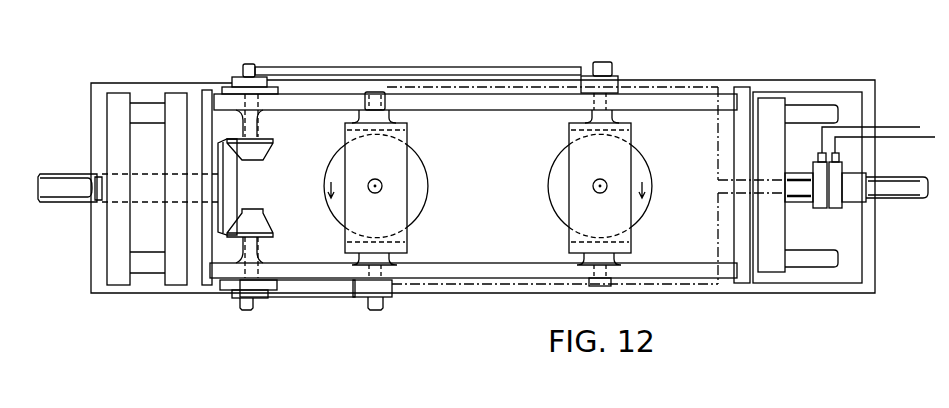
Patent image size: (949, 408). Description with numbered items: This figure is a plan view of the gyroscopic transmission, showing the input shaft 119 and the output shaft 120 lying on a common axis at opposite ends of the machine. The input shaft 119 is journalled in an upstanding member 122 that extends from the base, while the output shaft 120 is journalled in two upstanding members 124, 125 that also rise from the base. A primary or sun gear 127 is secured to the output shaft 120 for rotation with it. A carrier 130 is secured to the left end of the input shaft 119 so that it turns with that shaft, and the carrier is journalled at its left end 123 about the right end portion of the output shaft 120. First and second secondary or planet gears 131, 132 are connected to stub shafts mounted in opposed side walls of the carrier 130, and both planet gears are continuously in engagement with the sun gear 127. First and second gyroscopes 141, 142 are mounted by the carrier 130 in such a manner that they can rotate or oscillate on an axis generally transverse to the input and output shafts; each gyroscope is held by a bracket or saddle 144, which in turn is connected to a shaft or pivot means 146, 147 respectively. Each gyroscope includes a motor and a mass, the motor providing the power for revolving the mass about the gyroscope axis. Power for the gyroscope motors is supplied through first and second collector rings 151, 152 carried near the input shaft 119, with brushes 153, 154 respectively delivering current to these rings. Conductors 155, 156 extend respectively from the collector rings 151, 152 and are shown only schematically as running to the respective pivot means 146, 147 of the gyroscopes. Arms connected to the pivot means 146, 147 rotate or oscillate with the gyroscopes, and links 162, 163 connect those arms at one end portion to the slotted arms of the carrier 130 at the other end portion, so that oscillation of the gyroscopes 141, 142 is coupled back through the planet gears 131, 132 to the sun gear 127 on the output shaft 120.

The input shaft 119 is at (902, 198).
The output shaft 120 is at (86, 201).
The upstanding member 122 is at (768, 268).
The left end of carrier 123 is at (196, 173).
The upstanding member 124 is at (173, 102).
The upstanding member 125 is at (118, 100).
The sun gear 127 is at (237, 168).
The carrier 130 is at (660, 102).
The first planet gear 131 is at (266, 220).
The second planet gear 132 is at (270, 156).
The first gyroscope 141 is at (417, 200).
The second gyroscope 142 is at (567, 160).
The bracket or saddle 144 is at (398, 249).
The pivot means 146 is at (382, 262).
The pivot means 147 is at (615, 260).
The first collector ring 151 is at (818, 211).
The second collector ring 152 is at (835, 212).
The brush 153 is at (817, 161).
The brush 154 is at (840, 158).
The conductor 155 is at (718, 152).
The conductor 156 is at (717, 212).
The link 162 is at (295, 300).
The link 163 is at (368, 75).